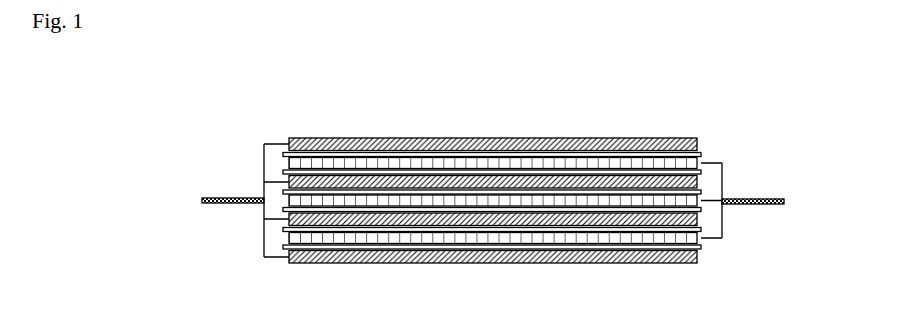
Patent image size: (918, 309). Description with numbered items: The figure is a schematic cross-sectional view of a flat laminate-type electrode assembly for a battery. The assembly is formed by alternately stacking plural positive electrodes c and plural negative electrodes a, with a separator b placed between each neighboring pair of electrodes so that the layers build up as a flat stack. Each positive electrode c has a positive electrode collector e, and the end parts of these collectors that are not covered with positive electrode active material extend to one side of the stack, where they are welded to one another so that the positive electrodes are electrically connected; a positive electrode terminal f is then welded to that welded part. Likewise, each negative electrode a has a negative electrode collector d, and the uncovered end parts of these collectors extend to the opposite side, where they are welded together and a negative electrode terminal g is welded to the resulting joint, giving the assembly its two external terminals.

The negative electrode a is at (598, 143).
The separator b is at (703, 153).
The positive electrode c is at (683, 238).
The negative electrode collector d is at (263, 245).
The positive electrode collector e is at (723, 222).
The positive electrode terminal f is at (767, 197).
The negative electrode terminal g is at (215, 198).